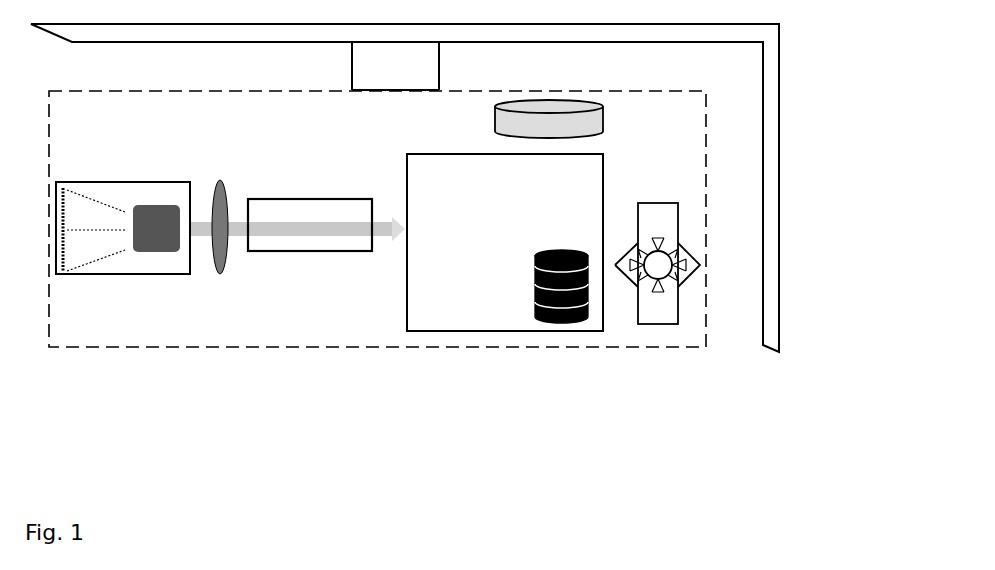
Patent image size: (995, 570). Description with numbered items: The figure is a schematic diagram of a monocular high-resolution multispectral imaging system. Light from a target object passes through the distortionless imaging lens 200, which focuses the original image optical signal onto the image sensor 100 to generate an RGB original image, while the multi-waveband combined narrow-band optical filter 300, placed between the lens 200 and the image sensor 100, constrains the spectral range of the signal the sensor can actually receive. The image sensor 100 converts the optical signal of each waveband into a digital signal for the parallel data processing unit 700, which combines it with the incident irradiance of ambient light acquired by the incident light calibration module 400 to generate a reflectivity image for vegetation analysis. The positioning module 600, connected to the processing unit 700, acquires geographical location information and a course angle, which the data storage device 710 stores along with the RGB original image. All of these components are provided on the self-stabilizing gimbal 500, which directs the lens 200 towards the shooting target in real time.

The image sensor 100 is at (270, 240).
The distortionless imaging lens 200 is at (148, 254).
The multi-waveband combined narrow-band optical filter 300 is at (220, 272).
The incident light calibration module 400 is at (585, 118).
The self-stabilizing gimbal 500 is at (763, 142).
The positioning module 600 is at (661, 320).
The parallel data processing unit 700 is at (442, 300).
The data storage device 710 is at (553, 317).